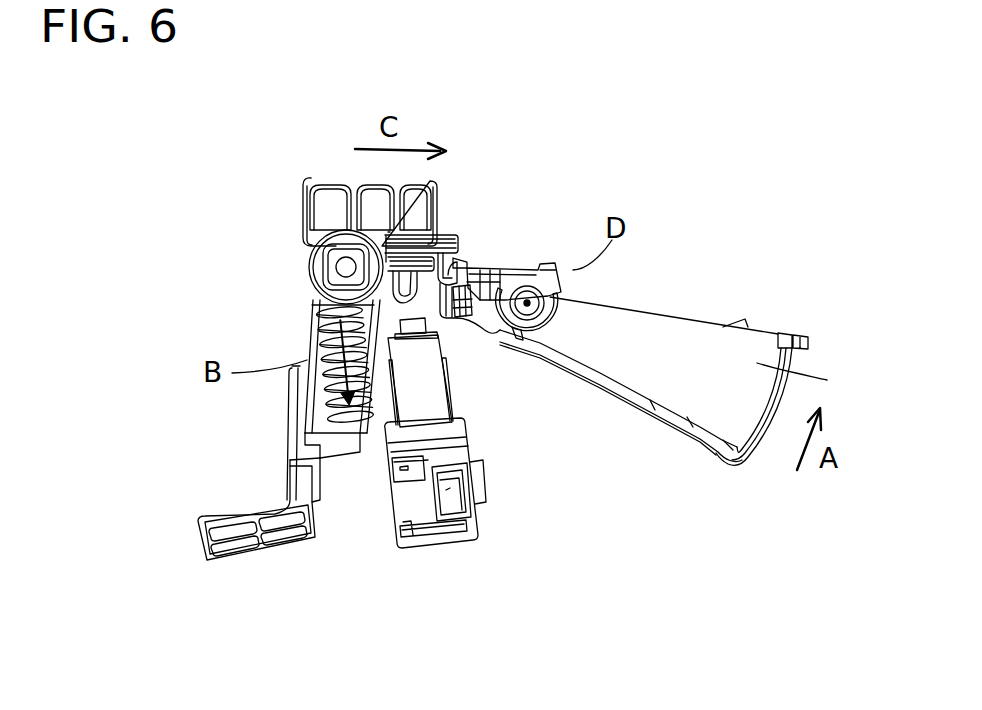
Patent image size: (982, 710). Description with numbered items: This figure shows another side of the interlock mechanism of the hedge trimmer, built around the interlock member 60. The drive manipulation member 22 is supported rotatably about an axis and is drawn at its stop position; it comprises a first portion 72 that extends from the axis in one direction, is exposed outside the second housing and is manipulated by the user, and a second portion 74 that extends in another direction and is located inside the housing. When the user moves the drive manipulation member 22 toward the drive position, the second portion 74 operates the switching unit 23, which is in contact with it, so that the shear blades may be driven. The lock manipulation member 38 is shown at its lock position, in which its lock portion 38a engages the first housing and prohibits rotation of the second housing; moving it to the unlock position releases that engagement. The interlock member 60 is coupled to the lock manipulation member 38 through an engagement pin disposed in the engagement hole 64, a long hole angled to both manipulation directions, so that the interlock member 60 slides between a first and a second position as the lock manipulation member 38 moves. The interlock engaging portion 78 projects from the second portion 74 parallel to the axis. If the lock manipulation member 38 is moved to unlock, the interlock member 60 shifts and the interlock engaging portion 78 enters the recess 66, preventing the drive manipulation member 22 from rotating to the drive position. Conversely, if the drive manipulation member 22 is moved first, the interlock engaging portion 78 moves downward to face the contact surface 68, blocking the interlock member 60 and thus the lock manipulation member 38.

The drive manipulation member 22 is at (765, 365).
The switching unit 23 is at (400, 502).
The lock manipulation member 38 is at (307, 312).
The lock portion 38a is at (215, 527).
The interlock member 60 is at (405, 272).
The engagement hole 64 is at (390, 232).
The recess 66 is at (455, 267).
The contact surface 68 is at (528, 292).
The first portion 72 is at (741, 300).
The second portion 74 is at (464, 334).
The interlock engaging portion 78 is at (490, 270).